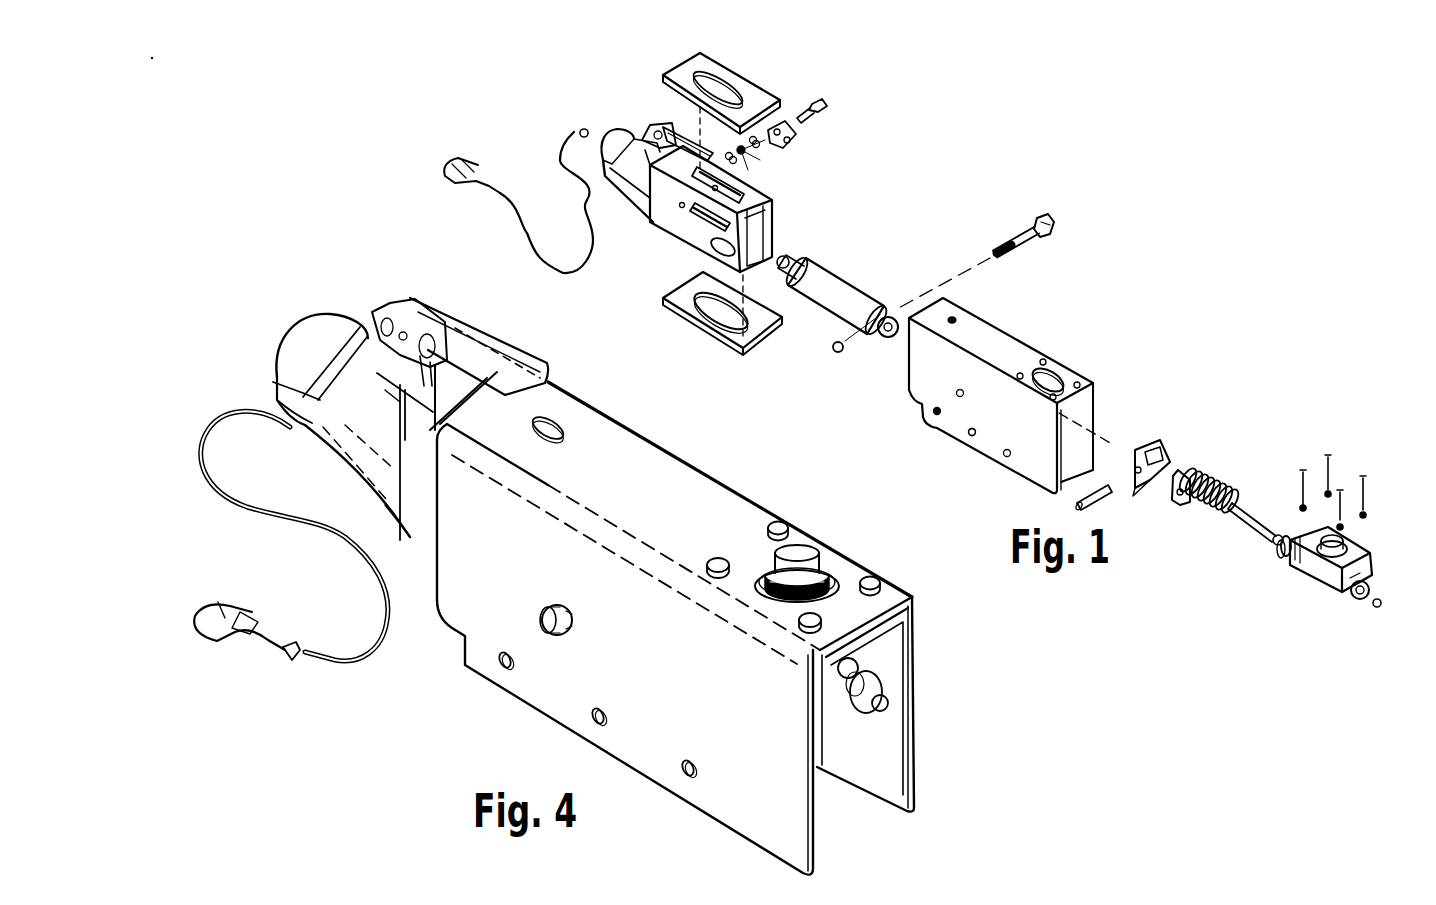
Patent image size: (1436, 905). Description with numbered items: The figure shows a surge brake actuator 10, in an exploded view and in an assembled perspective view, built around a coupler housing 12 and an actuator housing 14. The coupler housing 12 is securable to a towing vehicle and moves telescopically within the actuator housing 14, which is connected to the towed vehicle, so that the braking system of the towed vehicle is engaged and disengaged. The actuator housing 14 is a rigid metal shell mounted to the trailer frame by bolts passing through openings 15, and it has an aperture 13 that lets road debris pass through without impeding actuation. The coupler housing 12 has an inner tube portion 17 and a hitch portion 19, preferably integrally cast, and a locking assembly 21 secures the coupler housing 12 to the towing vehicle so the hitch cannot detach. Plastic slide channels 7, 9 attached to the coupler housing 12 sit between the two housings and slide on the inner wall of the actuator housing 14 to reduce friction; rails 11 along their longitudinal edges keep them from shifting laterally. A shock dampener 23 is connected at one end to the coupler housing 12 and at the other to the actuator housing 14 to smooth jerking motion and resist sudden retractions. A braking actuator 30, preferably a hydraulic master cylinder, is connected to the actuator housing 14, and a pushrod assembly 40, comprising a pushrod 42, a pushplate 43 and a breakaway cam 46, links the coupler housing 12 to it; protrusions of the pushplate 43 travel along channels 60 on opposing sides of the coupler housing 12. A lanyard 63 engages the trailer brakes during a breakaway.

In FIG. 1, the slide channel 7 is at (750, 103).
In FIG. 1, the slide channel 9 is at (760, 343).
In FIG. 1, the surge brake actuator 10 is at (1138, 290).
In FIG. 4, the surge brake actuator 10 is at (482, 706).
In FIG. 1, the rails 11 is at (747, 300).
In FIG. 1, the coupler housing 12 is at (615, 185).
In FIG. 4, the coupler housing 12 is at (380, 470).
In FIG. 4, the opening or aperture 13 is at (838, 815).
In FIG. 1, the actuator housing 14 is at (980, 318).
In FIG. 4, the actuator housing 14 is at (665, 500).
In FIG. 1, the openings 15 is at (970, 434).
In FIG. 4, the openings 15 is at (685, 776).
In FIG. 1, the inner tube portion 17 is at (745, 178).
In FIG. 1, the hitch portion 19 is at (617, 138).
In FIG. 1, the locking assembly 21 is at (673, 124).
In FIG. 4, the locking assembly 21 is at (455, 311).
In FIG. 1, the shock dampener 23 is at (838, 286).
In FIG. 1, the braking actuator 30 is at (1370, 563).
In FIG. 1, the pushrod assembly 40 is at (1197, 509).
In FIG. 1, the pushrod 42 is at (1228, 486).
In FIG. 1, the pushplate 43 is at (1180, 475).
In FIG. 1, the breakaway cam 46 is at (1143, 483).
In FIG. 1, the channels 60 is at (698, 216).
In FIG. 1, the lanyard 63 is at (517, 207).
In FIG. 4, the lanyard 63 is at (341, 537).